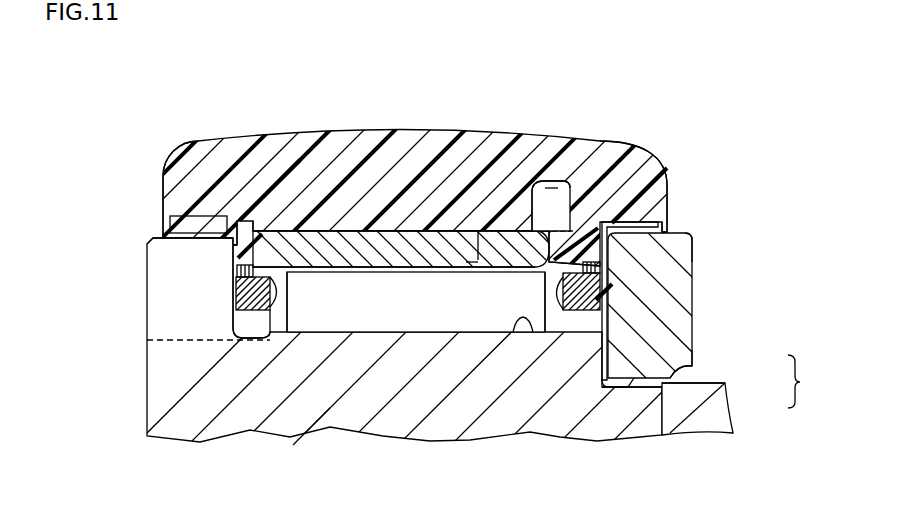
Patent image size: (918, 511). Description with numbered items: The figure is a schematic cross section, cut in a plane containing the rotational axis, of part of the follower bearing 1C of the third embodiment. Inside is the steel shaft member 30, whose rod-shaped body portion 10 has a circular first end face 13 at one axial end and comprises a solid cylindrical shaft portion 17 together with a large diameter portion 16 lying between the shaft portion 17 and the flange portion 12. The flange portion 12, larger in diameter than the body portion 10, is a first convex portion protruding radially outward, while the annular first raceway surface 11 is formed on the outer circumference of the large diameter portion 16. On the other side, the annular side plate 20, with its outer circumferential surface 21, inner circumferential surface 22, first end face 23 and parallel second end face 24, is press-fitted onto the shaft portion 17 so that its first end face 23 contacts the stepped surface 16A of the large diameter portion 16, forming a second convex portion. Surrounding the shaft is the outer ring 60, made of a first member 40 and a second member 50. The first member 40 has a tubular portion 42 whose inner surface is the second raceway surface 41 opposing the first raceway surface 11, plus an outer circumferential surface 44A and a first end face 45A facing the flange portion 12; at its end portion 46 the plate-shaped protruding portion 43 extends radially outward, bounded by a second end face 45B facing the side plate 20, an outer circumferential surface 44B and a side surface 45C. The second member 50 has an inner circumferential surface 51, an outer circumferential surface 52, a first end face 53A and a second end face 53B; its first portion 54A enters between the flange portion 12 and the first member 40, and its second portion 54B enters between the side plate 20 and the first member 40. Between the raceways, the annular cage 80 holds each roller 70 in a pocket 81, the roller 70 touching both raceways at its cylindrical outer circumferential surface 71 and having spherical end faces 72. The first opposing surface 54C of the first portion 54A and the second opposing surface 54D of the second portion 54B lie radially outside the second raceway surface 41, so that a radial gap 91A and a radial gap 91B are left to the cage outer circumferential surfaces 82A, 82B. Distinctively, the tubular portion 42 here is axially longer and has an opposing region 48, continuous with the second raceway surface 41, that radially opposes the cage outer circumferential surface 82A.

The follower bearing 1C is at (774, 95).
The body portion 10 is at (708, 393).
The first raceway surface 11 is at (552, 274).
The flange portion 12 is at (175, 262).
The first end face 13 is at (152, 427).
The large diameter portion 16 is at (327, 350).
The stepped surface 16A is at (628, 366).
The shaft portion 17 is at (710, 418).
The side plate 20 is at (686, 370).
The outer circumferential surface 21 is at (660, 230).
The inner circumferential surface 22 is at (654, 388).
The first end face 23 is at (487, 205).
The second end face 24 is at (693, 277).
The shaft member 30 is at (805, 381).
The first member 40 is at (395, 216).
The second raceway surface 41 is at (368, 236).
The tubular portion 42 is at (462, 236).
The protruding portion 43 is at (548, 178).
The outer circumferential surface 44A is at (347, 205).
The outer circumferential surface 44B is at (545, 212).
The first end face 45A is at (268, 160).
The second end face 45B is at (597, 210).
The side surface 45C is at (507, 230).
The end portion 46 is at (572, 186).
The opposing region 48 is at (232, 282).
The second member 50 is at (436, 196).
The inner circumferential surface 51 is at (423, 276).
The outer circumferential surface 52 is at (246, 140).
The first end face 53A is at (162, 192).
The second end face 53B is at (669, 192).
The first portion 54A is at (162, 166).
The second portion 54B is at (669, 180).
The first opposing surface 54C is at (247, 248).
The second opposing surface 54D is at (606, 303).
The outer ring 60 is at (376, 88).
The roller 70 is at (370, 318).
The outer circumferential surface 71 is at (472, 264).
The end face 72 is at (262, 316).
The cage 80 is at (265, 300).
The pocket 81 is at (322, 236).
The outer circumferential surface 82A is at (165, 238).
The outer circumferential surface 82B is at (666, 222).
The radial gap 91A is at (237, 273).
The radial gap 91B is at (694, 252).